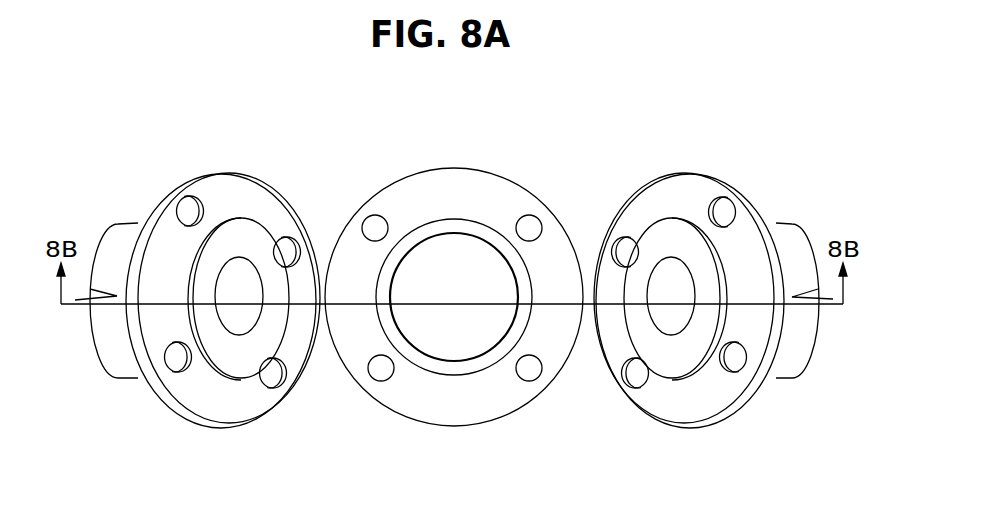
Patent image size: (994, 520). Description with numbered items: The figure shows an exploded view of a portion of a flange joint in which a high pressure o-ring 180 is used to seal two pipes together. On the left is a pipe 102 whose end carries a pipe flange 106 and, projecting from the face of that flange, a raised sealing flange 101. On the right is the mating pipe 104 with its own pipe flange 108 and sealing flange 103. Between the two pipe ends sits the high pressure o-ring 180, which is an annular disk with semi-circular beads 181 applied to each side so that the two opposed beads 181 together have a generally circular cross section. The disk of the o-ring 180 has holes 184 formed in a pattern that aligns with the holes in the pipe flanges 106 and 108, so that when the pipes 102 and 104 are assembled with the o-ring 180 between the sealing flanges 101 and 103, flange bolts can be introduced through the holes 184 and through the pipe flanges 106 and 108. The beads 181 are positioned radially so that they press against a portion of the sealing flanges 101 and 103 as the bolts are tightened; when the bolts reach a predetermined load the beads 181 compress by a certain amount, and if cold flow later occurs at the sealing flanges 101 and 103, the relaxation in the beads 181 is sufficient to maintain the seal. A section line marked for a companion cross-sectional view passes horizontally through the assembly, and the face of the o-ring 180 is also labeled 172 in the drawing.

The sealing flange 101 is at (248, 236).
The pipe 102 is at (122, 238).
The sealing flange 103 is at (667, 242).
The pipe 104 is at (793, 227).
The flange 106 is at (180, 413).
The flange 108 is at (708, 422).
The flange face 172 is at (501, 208).
The high pressure o-ring 180 is at (465, 288).
The semi-circular bead 181 is at (459, 367).
The hole 184 is at (381, 365).